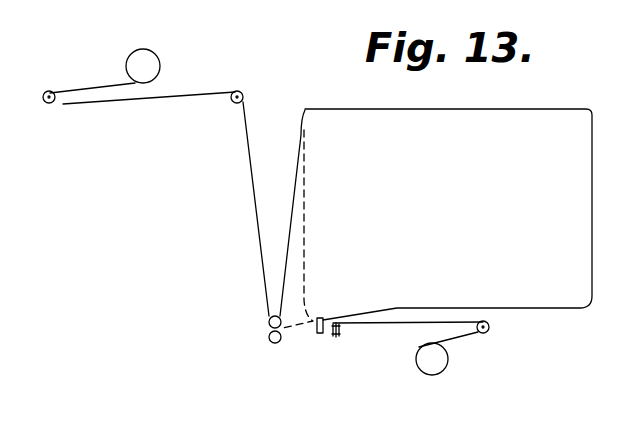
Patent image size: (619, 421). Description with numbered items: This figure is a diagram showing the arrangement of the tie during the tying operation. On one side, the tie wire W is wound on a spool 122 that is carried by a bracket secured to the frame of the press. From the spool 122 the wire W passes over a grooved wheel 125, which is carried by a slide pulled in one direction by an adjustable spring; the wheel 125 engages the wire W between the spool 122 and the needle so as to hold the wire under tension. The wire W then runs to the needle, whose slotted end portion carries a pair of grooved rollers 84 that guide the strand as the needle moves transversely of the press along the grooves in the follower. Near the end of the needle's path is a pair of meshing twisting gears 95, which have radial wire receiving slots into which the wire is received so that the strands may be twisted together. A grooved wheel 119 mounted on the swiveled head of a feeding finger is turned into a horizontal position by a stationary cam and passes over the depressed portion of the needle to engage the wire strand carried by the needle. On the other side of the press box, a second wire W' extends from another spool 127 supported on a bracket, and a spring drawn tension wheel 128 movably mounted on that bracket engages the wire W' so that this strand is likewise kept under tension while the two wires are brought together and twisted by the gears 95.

The tie wire W is at (321, 200).
The wire W' is at (492, 354).
The spool 122 is at (153, 58).
The grooved wheel 125 is at (49, 103).
The grooved rollers 84 is at (269, 322).
The twisting gears 95 is at (318, 333).
The grooved wheel 119 is at (339, 332).
The tension wheel 128 is at (489, 327).
The spool 127 is at (434, 373).